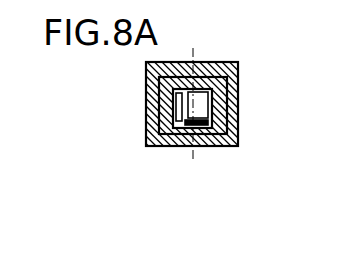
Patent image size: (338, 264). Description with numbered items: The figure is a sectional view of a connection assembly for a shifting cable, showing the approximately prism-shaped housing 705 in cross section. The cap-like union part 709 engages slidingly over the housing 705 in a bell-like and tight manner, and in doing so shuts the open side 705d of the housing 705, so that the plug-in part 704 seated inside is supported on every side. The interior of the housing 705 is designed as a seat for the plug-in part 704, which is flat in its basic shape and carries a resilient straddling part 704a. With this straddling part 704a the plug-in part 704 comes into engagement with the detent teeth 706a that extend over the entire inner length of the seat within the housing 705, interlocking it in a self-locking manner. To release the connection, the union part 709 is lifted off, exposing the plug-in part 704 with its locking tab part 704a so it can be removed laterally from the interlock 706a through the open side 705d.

The housing 705 is at (238, 73).
The cap-like union part 709 is at (208, 63).
The resilient straddling part 704a is at (213, 100).
The plug-in part 704 is at (180, 108).
The detent teeth 706a is at (213, 124).
The open side of the housing 705d is at (186, 130).